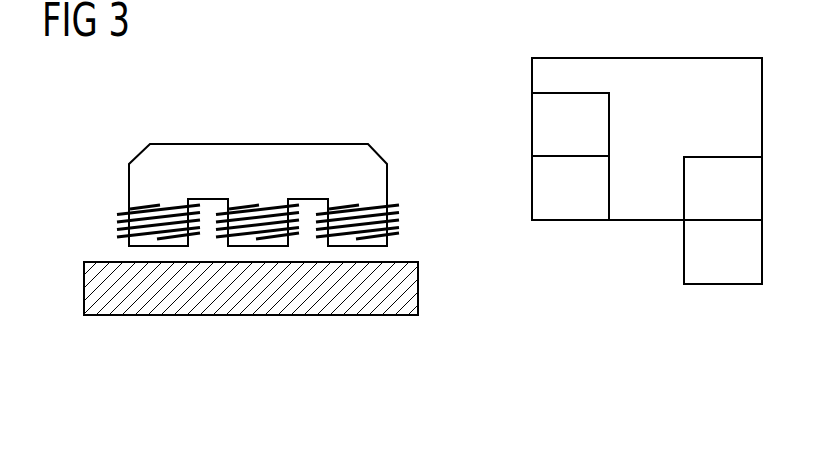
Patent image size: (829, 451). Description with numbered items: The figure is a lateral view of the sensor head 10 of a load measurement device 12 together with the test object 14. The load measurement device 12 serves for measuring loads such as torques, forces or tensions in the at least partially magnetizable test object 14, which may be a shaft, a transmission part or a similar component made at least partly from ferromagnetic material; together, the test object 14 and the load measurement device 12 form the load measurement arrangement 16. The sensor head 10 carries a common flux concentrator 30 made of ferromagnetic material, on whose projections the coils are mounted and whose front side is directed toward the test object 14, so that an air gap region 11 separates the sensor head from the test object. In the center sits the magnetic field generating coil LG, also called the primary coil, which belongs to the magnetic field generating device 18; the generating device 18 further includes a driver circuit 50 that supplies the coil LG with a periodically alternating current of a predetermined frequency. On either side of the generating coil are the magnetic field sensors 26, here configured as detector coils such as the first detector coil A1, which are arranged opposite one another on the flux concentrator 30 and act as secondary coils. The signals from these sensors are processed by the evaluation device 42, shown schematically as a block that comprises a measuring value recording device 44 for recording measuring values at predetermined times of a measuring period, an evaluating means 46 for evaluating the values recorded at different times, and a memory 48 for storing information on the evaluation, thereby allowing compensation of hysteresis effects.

The sensor head 10 is at (413, 125).
The electric machine / air gap 11 is at (295, 347).
The load measurement device 12 is at (335, 78).
The test object 14 is at (251, 308).
The load measurement arrangement 16 is at (97, 170).
The magnetic field generating device 18 is at (232, 207).
The magnetic field sensors 26 is at (152, 202).
The flux concentrator 30 is at (273, 143).
The evaluation device 42 is at (720, 114).
The measuring value recording device 44 is at (738, 207).
The evaluating means 46 is at (585, 206).
The memory 48 is at (410, 295).
The driver circuit 50 is at (738, 270).
The first detector coil A1 is at (141, 310).
The magnetic field generating coil LG is at (370, 376).